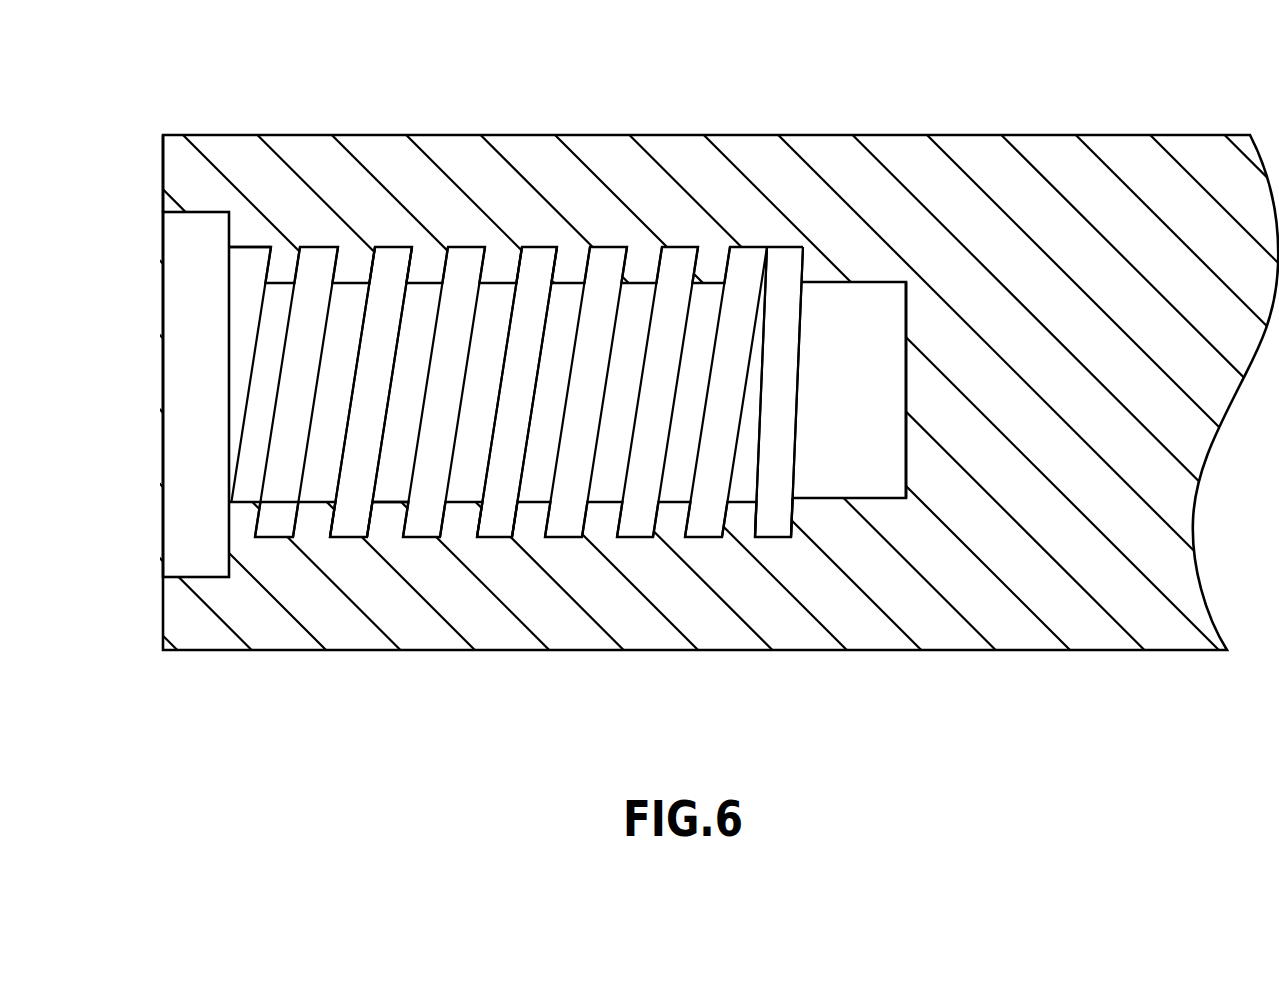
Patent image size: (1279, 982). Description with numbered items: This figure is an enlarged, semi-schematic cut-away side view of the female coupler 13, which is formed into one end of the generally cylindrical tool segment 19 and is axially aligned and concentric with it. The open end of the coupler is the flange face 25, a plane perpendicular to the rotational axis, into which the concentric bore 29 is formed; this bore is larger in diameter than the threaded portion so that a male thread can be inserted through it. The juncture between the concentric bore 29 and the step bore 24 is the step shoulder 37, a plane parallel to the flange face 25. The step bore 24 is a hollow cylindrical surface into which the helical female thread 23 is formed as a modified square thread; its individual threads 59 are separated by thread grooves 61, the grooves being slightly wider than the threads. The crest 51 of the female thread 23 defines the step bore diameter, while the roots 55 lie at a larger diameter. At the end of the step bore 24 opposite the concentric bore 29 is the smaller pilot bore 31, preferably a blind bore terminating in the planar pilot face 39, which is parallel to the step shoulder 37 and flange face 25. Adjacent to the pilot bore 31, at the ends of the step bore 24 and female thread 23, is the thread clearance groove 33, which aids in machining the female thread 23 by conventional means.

The tool segment 19 is at (639, 336).
The female coupler 13 is at (386, 136).
The flange face 25 is at (163, 163).
The concentric bore 29 is at (180, 213).
The step shoulder 37 is at (228, 268).
The threads 59 is at (273, 292).
The female thread 23 is at (504, 397).
The step bore 24 is at (563, 279).
The pilot bore 31 is at (848, 292).
The pilot face 39 is at (900, 388).
The thread grooves 61 is at (282, 500).
The roots 55 is at (340, 534).
The crest 51 is at (398, 497).
The thread clearance groove 33 is at (773, 530).